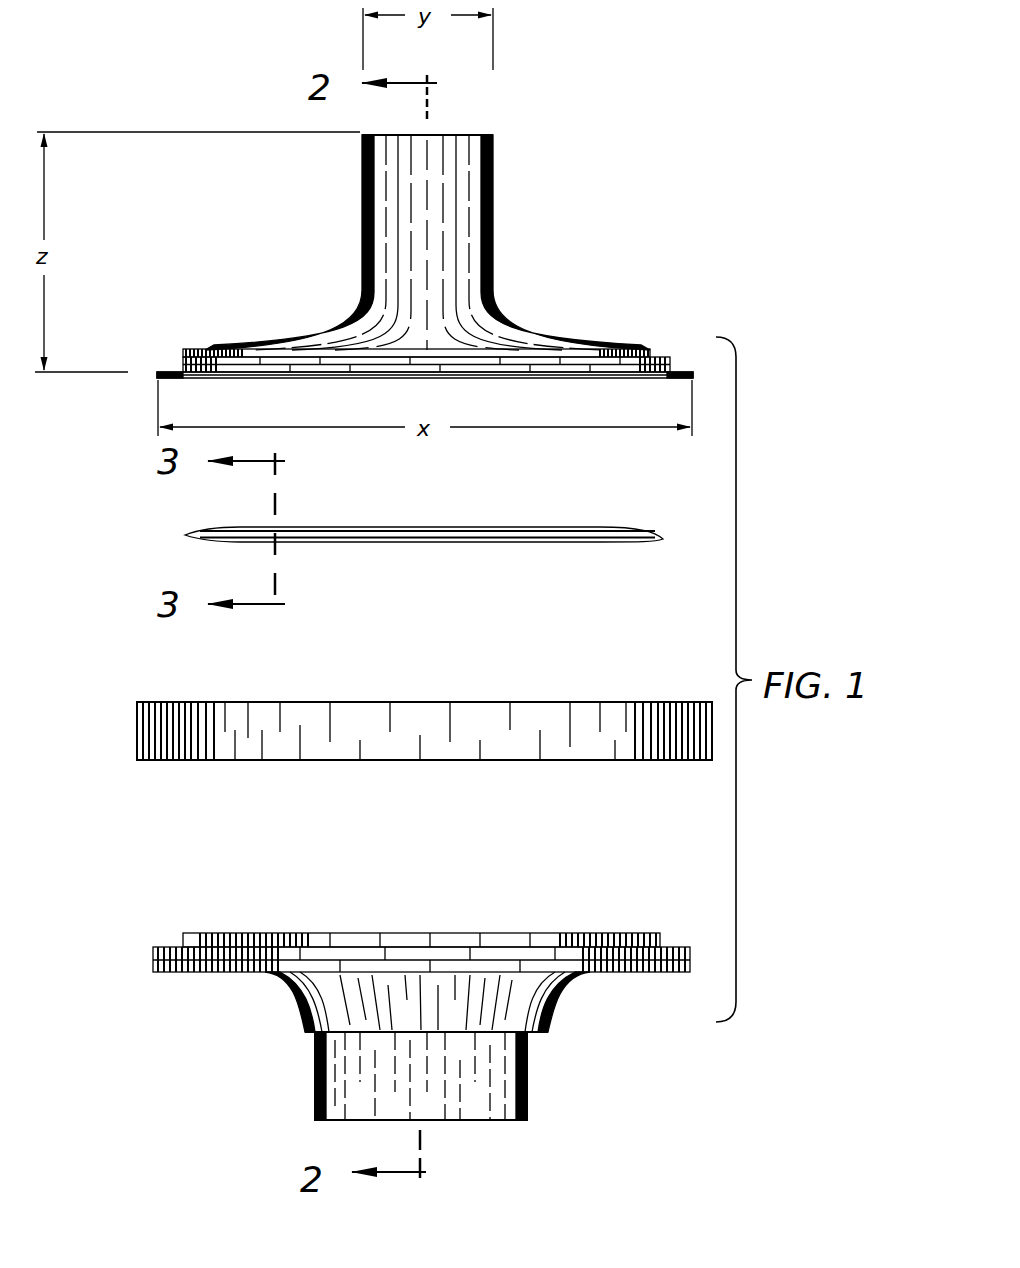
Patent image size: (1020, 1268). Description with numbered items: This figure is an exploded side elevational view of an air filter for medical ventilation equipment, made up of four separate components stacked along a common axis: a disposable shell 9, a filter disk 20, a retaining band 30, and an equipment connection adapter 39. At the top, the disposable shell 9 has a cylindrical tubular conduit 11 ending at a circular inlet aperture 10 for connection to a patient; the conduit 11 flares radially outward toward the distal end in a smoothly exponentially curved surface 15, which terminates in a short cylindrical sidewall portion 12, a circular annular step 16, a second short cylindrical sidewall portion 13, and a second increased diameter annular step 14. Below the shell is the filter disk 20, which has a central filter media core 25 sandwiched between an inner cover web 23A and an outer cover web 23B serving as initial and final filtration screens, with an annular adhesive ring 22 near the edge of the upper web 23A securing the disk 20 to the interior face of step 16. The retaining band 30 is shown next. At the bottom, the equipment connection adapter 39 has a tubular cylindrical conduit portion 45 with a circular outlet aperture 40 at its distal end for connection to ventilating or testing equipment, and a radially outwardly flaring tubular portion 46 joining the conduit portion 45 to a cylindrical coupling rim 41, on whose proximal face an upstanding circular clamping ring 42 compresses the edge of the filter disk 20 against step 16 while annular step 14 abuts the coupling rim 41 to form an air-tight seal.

The disposable shell 9 is at (362, 302).
The circular inlet aperture 10 is at (465, 135).
The cylindrical tubular conduit 11 is at (367, 208).
The cylindrical sidewall portion 12 is at (212, 347).
The second short cylindrical sidewall portion 13 is at (185, 362).
The second increased diameter circular annular step 14 is at (160, 375).
The exponentially curved surface 15 is at (503, 303).
The circular annular step 16 is at (660, 352).
The filter disk 20 is at (418, 530).
The annular adhesive ring 22 is at (648, 537).
The inner cover web 23A is at (556, 529).
The outer cover web 23B is at (530, 545).
The central filter media core 25 is at (613, 545).
The retaining band 30 is at (137, 714).
The equipment connection adapter 39 is at (300, 1025).
The circular outlet aperture 40 is at (490, 1122).
The cylindrical coupling rim 41 is at (155, 958).
The circular clamping ring 42 is at (650, 933).
The tubular cylindrical conduit portion 45 is at (528, 1080).
The flaring tubular portion 46 is at (555, 993).